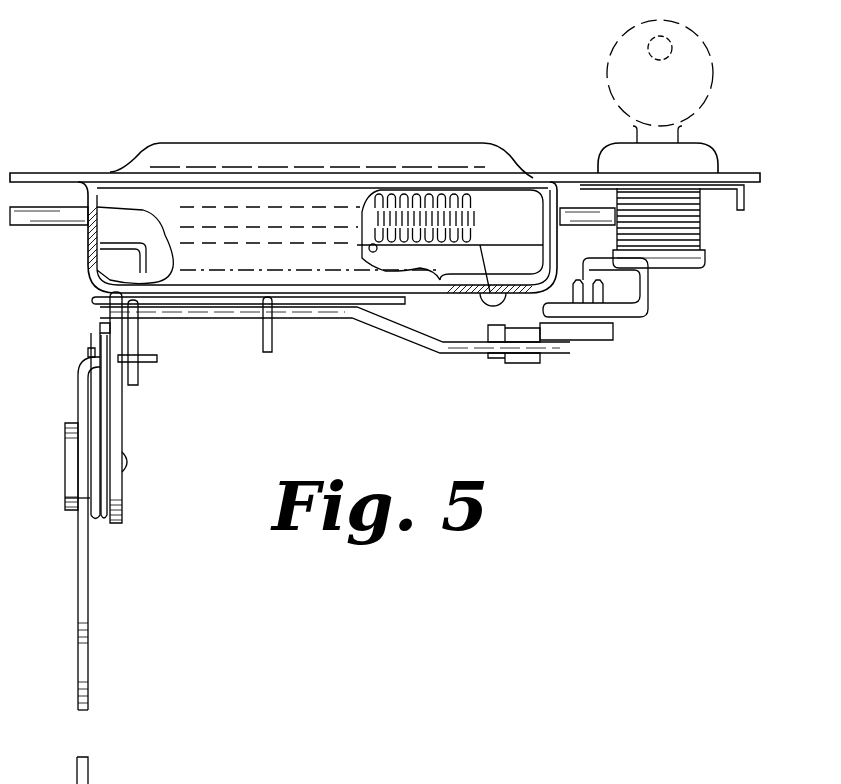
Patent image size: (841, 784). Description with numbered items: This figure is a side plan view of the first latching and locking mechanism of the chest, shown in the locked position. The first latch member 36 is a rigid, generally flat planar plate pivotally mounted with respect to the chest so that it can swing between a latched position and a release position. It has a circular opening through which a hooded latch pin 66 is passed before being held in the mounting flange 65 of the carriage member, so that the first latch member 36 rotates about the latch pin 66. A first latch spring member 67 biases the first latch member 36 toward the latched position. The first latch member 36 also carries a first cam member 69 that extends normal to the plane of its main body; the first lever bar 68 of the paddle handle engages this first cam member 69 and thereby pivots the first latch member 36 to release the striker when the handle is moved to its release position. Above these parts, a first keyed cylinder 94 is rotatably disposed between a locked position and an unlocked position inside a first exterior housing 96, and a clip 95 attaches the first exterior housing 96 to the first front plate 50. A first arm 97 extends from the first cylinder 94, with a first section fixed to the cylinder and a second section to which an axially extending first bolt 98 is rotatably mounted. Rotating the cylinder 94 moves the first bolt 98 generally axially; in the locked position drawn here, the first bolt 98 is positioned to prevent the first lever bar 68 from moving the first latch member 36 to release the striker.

The first front plate 50 is at (57, 173).
The first keyed cylinder 94 is at (705, 151).
The clip 95 is at (749, 195).
The first exterior housing 96 is at (693, 223).
The first arm 97 is at (643, 283).
The first bolt 98 is at (418, 343).
The first lever bar 68 is at (137, 328).
The first cam member 69 is at (142, 373).
The mounting flange 65 is at (115, 413).
The hooded latch pin 66 is at (124, 472).
The first latch spring member 67 is at (100, 520).
The first latch member 36 is at (88, 598).